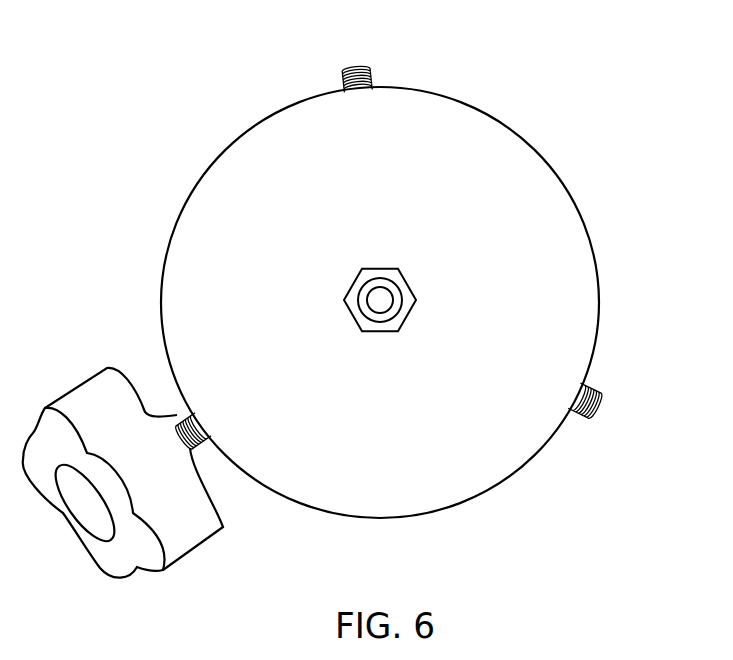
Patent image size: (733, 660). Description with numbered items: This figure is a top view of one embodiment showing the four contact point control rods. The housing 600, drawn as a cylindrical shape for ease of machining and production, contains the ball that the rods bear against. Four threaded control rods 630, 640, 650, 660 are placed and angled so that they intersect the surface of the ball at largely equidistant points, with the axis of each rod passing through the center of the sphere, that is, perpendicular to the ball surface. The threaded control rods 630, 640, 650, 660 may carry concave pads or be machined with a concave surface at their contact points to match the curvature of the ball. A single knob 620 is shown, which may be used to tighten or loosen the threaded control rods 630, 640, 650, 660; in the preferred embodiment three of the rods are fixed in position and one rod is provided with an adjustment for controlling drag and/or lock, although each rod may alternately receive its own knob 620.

The housing 600 is at (383, 433).
The knob 620 is at (82, 387).
The threaded control rod 630 is at (377, 292).
The threaded control rod 640 is at (360, 73).
The threaded control rod 650 is at (182, 415).
The threaded control rod 660 is at (600, 410).